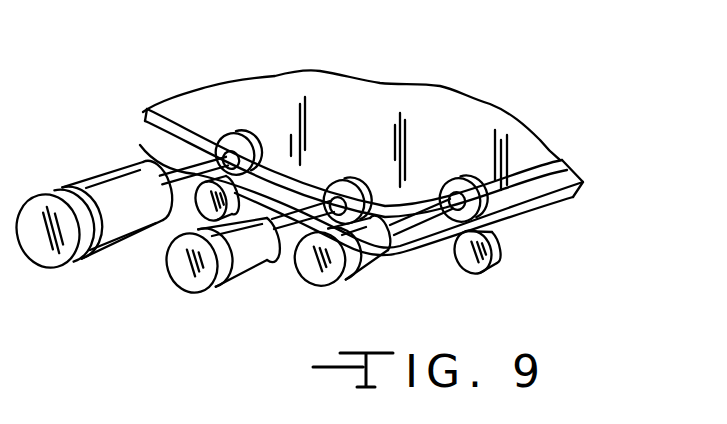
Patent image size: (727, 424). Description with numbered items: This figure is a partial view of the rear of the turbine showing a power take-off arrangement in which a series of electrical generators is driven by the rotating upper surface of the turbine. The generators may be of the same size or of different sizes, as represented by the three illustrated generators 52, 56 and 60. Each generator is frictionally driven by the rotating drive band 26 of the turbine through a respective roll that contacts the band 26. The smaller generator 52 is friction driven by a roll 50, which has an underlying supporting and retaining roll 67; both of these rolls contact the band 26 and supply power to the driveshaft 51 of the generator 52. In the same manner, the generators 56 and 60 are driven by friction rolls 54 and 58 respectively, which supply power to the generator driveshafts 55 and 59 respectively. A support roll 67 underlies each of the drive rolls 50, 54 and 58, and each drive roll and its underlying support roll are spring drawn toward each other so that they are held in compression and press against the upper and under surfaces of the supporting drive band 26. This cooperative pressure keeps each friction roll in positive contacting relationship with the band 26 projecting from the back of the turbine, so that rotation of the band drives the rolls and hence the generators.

The drive band 26 is at (572, 172).
The roll 50 is at (520, 161).
The driveshaft 51 is at (412, 207).
The generator 52 is at (363, 283).
The friction roll 54 is at (360, 183).
The generator driveshaft 55 is at (298, 195).
The generator 56 is at (246, 275).
The friction roll 58 is at (248, 141).
The generator driveshaft 59 is at (140, 145).
The generator 60 is at (112, 250).
The support roll 67 is at (175, 222).